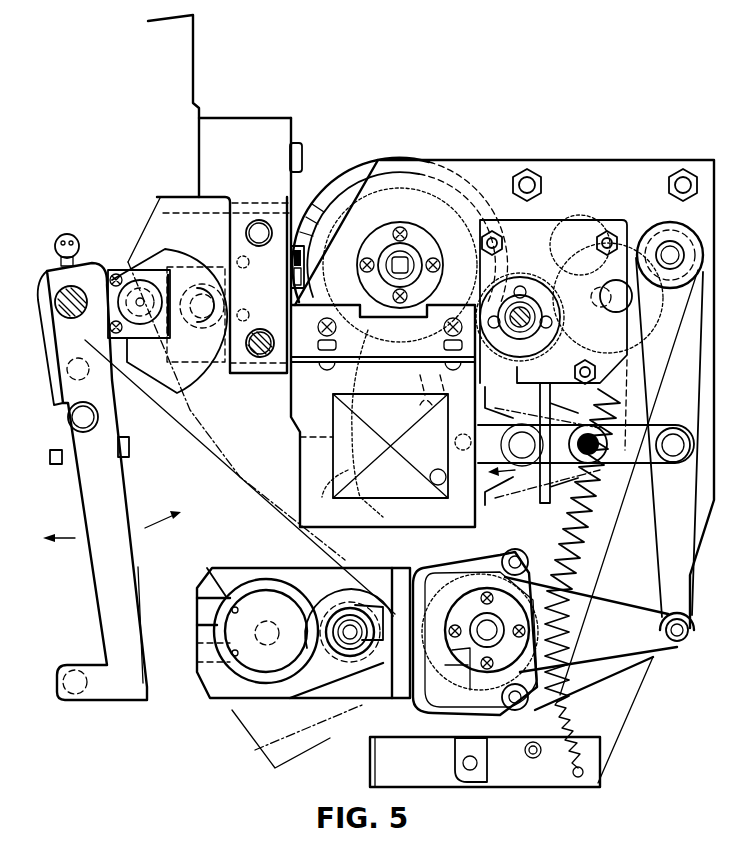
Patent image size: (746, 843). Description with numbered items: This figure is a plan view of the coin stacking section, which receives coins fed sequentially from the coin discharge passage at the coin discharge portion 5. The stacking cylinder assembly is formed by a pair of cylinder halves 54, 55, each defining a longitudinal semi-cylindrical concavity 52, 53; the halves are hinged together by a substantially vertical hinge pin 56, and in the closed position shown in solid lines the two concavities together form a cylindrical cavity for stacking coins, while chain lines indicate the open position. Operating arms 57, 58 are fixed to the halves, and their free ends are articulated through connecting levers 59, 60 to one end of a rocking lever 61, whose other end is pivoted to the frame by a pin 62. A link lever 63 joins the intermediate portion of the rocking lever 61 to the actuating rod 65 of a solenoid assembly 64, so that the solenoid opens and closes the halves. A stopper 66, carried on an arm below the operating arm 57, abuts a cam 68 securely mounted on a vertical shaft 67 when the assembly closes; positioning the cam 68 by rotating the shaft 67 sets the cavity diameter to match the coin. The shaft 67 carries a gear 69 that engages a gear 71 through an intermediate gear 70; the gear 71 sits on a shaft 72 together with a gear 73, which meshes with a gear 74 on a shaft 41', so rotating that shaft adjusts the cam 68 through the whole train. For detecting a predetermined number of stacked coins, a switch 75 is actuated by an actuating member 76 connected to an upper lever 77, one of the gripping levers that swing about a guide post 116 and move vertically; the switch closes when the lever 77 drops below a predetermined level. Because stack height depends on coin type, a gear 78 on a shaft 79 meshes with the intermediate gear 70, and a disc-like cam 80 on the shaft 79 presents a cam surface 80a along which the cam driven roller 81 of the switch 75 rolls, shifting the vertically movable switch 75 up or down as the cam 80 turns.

The coin discharge portion 5 is at (184, 705).
The shaft 41' is at (520, 307).
The semi-cylindrical concavity 52 is at (222, 600).
The semi-cylindrical concavity 53 is at (232, 710).
The cylinder half 54 is at (200, 600).
The cylinder half 55 is at (202, 672).
The hinge pin 56 is at (347, 624).
The operating arm 57 is at (410, 725).
The operating arm 58 is at (422, 560).
The connecting lever 59 is at (598, 675).
The connecting lever 60 is at (622, 597).
The rocking lever 61 is at (657, 517).
The pin 62 is at (660, 242).
The link lever 63 is at (648, 430).
The solenoid assembly 64 is at (335, 451).
The actuating rod 65 is at (503, 458).
The stopper 66 is at (512, 712).
The vertical shaft 67 is at (466, 620).
The cam 68 is at (468, 655).
The gear 69 is at (437, 705).
The intermediate gear 70 is at (378, 447).
The gear 71 is at (591, 222).
The shaft 72 is at (592, 314).
The gear 73 is at (571, 245).
The gear 74 is at (495, 358).
The switch 75 is at (217, 353).
The actuating member 76 is at (155, 373).
The upper lever 77 is at (97, 570).
The gear 78 is at (340, 215).
The shaft 79 is at (401, 258).
The disc-like cam 80 is at (356, 185).
The cam surface 80a is at (348, 178).
The cam driven roller 81 is at (291, 267).
The guide post 116 is at (73, 292).